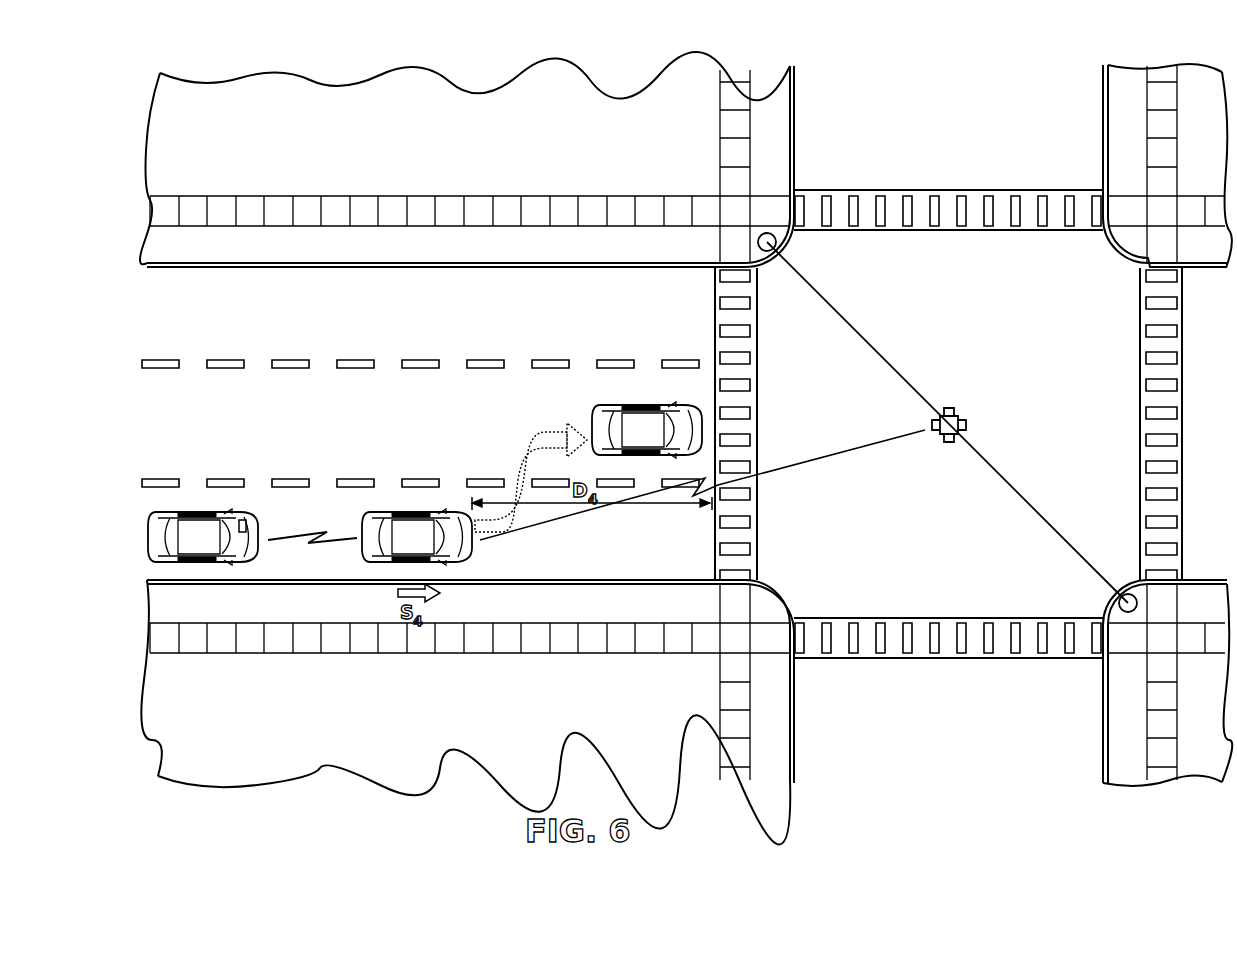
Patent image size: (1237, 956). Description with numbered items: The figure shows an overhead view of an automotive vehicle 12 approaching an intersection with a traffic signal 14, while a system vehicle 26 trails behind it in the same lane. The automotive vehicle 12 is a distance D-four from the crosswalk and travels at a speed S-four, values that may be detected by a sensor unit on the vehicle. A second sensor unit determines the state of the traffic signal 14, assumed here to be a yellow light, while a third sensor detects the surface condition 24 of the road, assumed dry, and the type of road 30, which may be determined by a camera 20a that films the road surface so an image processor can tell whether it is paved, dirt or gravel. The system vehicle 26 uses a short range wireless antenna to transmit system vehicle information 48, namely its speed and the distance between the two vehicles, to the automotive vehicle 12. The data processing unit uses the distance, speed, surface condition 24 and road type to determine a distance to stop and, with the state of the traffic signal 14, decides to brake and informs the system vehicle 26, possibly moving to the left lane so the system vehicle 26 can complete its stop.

The automotive vehicle 12 is at (400, 510).
The traffic signal 14 is at (962, 414).
The camera 20a is at (242, 520).
The surface condition of the road 24 is at (600, 571).
The system vehicle 26 is at (197, 562).
The type of road 30 is at (662, 562).
The system vehicle information 48 is at (300, 538).